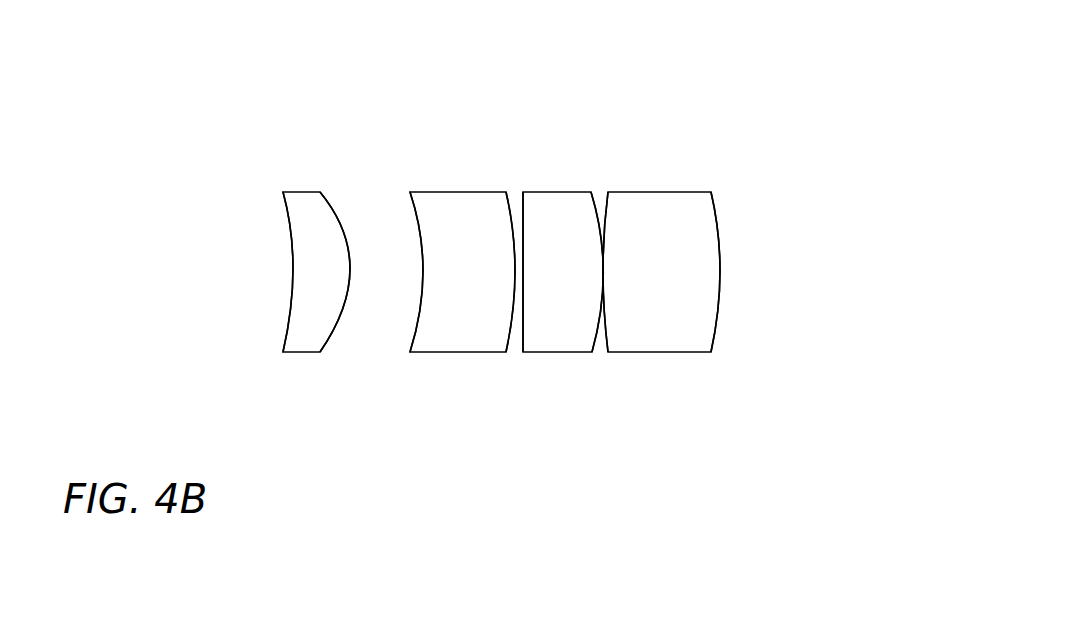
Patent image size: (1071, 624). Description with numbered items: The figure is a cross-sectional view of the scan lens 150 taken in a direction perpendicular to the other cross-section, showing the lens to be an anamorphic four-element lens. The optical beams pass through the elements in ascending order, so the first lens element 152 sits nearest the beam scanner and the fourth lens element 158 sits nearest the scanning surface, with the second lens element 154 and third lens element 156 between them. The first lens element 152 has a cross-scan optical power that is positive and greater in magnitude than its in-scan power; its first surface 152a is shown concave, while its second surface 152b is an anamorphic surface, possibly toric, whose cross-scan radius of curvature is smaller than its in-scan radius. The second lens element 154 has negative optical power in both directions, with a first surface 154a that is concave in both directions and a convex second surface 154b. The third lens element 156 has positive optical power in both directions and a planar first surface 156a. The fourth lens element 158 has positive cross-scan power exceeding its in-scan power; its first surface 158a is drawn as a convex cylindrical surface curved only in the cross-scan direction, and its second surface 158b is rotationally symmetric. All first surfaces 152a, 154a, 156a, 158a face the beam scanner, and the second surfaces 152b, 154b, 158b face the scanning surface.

The scan lens 150 is at (743, 62).
The first lens element 152 is at (303, 192).
The first surface of the first lens element 152a is at (288, 332).
The second surface of the first lens element 152b is at (335, 212).
The second lens element 154 is at (461, 192).
The first surface of the second lens element 154a is at (413, 332).
The second surface of the second lens element 154b is at (512, 213).
The third lens element 156 is at (561, 192).
The first surface of the third lens element 156a is at (522, 331).
The fourth lens element 158 is at (662, 192).
The first surface of the fourth lens element 158a is at (605, 331).
The second surface of the fourth lens element 158b is at (718, 273).